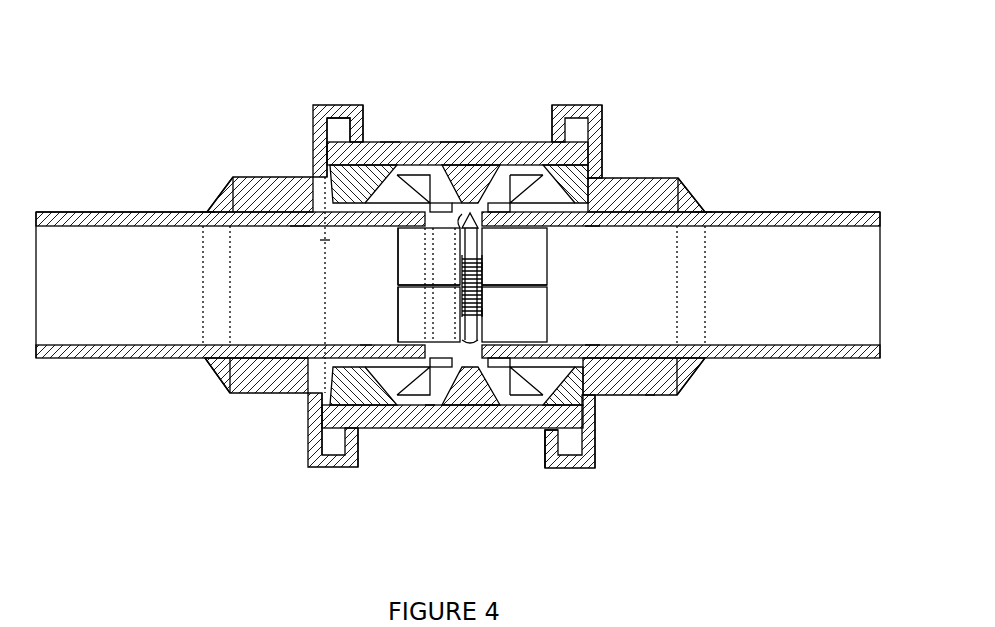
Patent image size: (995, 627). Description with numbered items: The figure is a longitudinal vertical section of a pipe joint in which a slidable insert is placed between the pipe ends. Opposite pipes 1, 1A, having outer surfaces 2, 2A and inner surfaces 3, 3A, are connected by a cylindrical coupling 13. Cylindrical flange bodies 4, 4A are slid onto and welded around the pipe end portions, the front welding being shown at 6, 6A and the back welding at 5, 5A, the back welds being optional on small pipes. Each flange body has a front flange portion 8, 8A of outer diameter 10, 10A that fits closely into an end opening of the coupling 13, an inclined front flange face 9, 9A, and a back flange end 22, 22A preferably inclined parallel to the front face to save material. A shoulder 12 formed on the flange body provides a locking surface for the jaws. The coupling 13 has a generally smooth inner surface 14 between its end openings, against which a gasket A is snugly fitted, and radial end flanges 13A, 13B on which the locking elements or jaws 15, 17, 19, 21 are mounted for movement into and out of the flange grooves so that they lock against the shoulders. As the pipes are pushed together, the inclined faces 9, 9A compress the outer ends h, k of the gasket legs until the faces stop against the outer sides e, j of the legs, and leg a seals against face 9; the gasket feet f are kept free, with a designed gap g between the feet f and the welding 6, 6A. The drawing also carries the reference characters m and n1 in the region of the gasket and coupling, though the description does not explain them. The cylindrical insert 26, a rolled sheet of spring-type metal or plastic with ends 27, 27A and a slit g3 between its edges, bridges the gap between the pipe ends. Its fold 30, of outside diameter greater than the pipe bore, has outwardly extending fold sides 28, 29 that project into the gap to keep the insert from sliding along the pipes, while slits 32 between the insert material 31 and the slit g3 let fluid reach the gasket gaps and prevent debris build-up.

The pipe 1 is at (50, 345).
The pipe 1A is at (790, 345).
The outer surface 2 is at (48, 212).
The outer surface 2A is at (795, 213).
The inner surface 3 is at (57, 228).
The inner surface 3A is at (830, 228).
The cylindrical flange body 4 is at (215, 378).
The cylindrical flange body 4A is at (680, 393).
The back weld 5 is at (207, 210).
The back weld 5A is at (700, 208).
The front welding 6 is at (327, 292).
The front welding 6A is at (600, 330).
The front flange portion 8 is at (372, 142).
The front flange portion 8A is at (604, 125).
The front flange face 9 is at (343, 207).
The front flange face 9A is at (610, 400).
The outer diameter 10 is at (265, 177).
The outer diameter 10A is at (640, 178).
The shoulder 12 is at (300, 225).
The cylindrical coupling 13 is at (513, 142).
The radial end flange 13A is at (332, 122).
The radial end flange 13B is at (550, 470).
The inner surface 14 is at (453, 142).
The locking element 15 is at (313, 140).
The locking element 17 is at (330, 470).
The locking element 19 is at (600, 110).
The locking element 21 is at (597, 445).
The back flange end 22 is at (215, 185).
The back flange end 22A is at (690, 185).
The slidable insert 26 is at (429, 256).
The insert end 27 is at (398, 232).
The insert end 27A is at (548, 232).
The fold side 28 is at (458, 224).
The fold side 29 is at (478, 225).
The fold 30 is at (438, 315).
The insert material 31 is at (482, 268).
The slit 32 is at (480, 256).
The gasket leg a is at (472, 142).
The outer side of gasket leg e is at (390, 142).
The gasket feet f is at (430, 400).
The designed gap g is at (365, 310).
The slit g3 is at (398, 290).
The outer end of gasket leg h is at (325, 240).
The outer side of gasket leg j is at (555, 415).
The outer end of gasket leg k is at (650, 395).
The cone m is at (470, 168).
The gap n1 is at (455, 178).
The gasket A is at (454, 191).